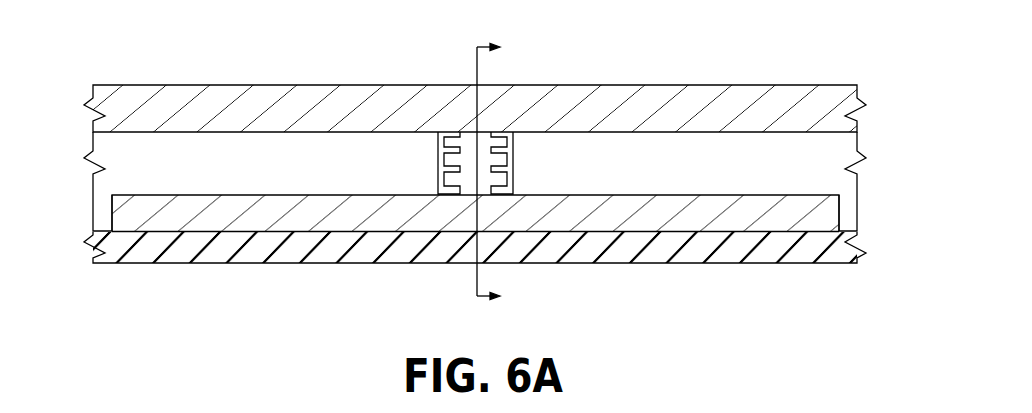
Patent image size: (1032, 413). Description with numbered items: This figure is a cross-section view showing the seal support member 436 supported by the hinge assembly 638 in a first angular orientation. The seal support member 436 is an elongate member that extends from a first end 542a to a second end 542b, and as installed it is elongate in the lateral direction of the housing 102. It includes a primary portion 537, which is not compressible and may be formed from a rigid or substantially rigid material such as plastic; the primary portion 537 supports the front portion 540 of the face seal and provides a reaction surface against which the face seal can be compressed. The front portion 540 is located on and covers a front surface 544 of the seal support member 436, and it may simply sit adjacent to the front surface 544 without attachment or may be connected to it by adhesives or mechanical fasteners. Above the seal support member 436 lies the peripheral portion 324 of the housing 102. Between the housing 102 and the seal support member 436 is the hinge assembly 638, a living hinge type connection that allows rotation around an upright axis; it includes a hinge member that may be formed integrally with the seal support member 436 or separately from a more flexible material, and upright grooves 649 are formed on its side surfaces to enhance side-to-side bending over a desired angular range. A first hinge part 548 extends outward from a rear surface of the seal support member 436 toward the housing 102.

The housing 102 is at (474, 172).
The peripheral portion 324 is at (783, 85).
The first hinge part 548 is at (845, 144).
The primary portion 537 is at (521, 245).
The seal support member 436 is at (98, 217).
The first end 542a is at (113, 220).
The second end 542b is at (834, 218).
The front surface 544 is at (312, 232).
The front portion 540 is at (568, 264).
The hinge assembly 638 is at (481, 118).
The upright grooves 649 is at (505, 147).